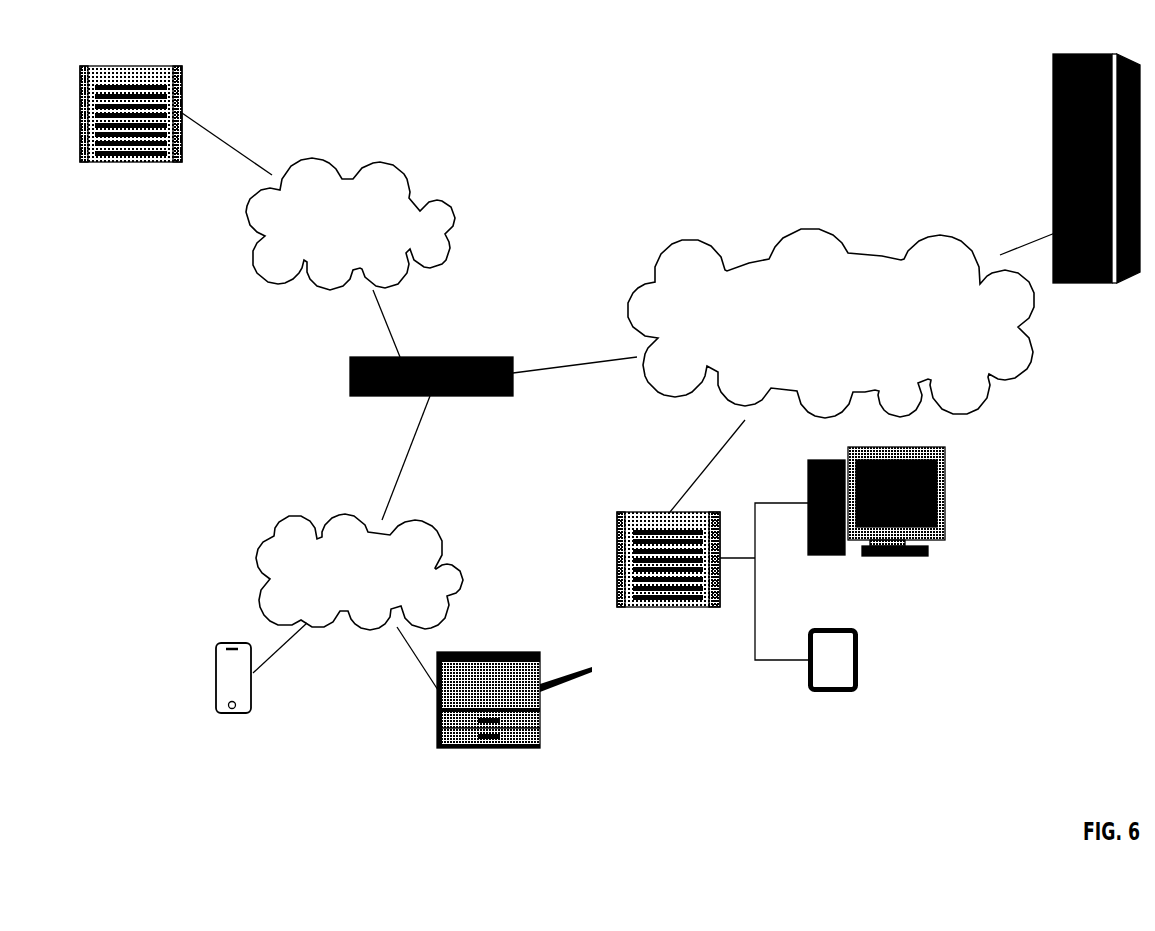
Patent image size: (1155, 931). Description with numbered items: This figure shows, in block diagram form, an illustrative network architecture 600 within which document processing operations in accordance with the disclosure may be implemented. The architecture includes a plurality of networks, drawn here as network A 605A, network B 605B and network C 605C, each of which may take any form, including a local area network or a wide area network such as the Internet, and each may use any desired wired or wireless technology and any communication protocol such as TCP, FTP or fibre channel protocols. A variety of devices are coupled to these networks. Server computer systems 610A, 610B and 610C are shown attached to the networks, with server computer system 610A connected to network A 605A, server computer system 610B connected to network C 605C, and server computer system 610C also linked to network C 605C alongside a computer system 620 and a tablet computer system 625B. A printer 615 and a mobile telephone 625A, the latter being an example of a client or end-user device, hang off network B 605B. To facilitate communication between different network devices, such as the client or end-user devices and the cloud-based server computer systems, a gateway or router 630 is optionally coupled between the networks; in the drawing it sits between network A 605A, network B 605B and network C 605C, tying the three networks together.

The network architecture 600 is at (586, 62).
The network 605A is at (430, 174).
The network 605B is at (268, 532).
The network 605C is at (679, 248).
The server computer system 610A is at (182, 98).
The server computer system 610B is at (1058, 137).
The server computer system 610C is at (617, 522).
The printer 615 is at (513, 742).
The computer system 620 is at (947, 507).
The mobile telephone 625A is at (238, 713).
The tablet computer system 625B is at (858, 645).
The gateway or router 630 is at (500, 357).